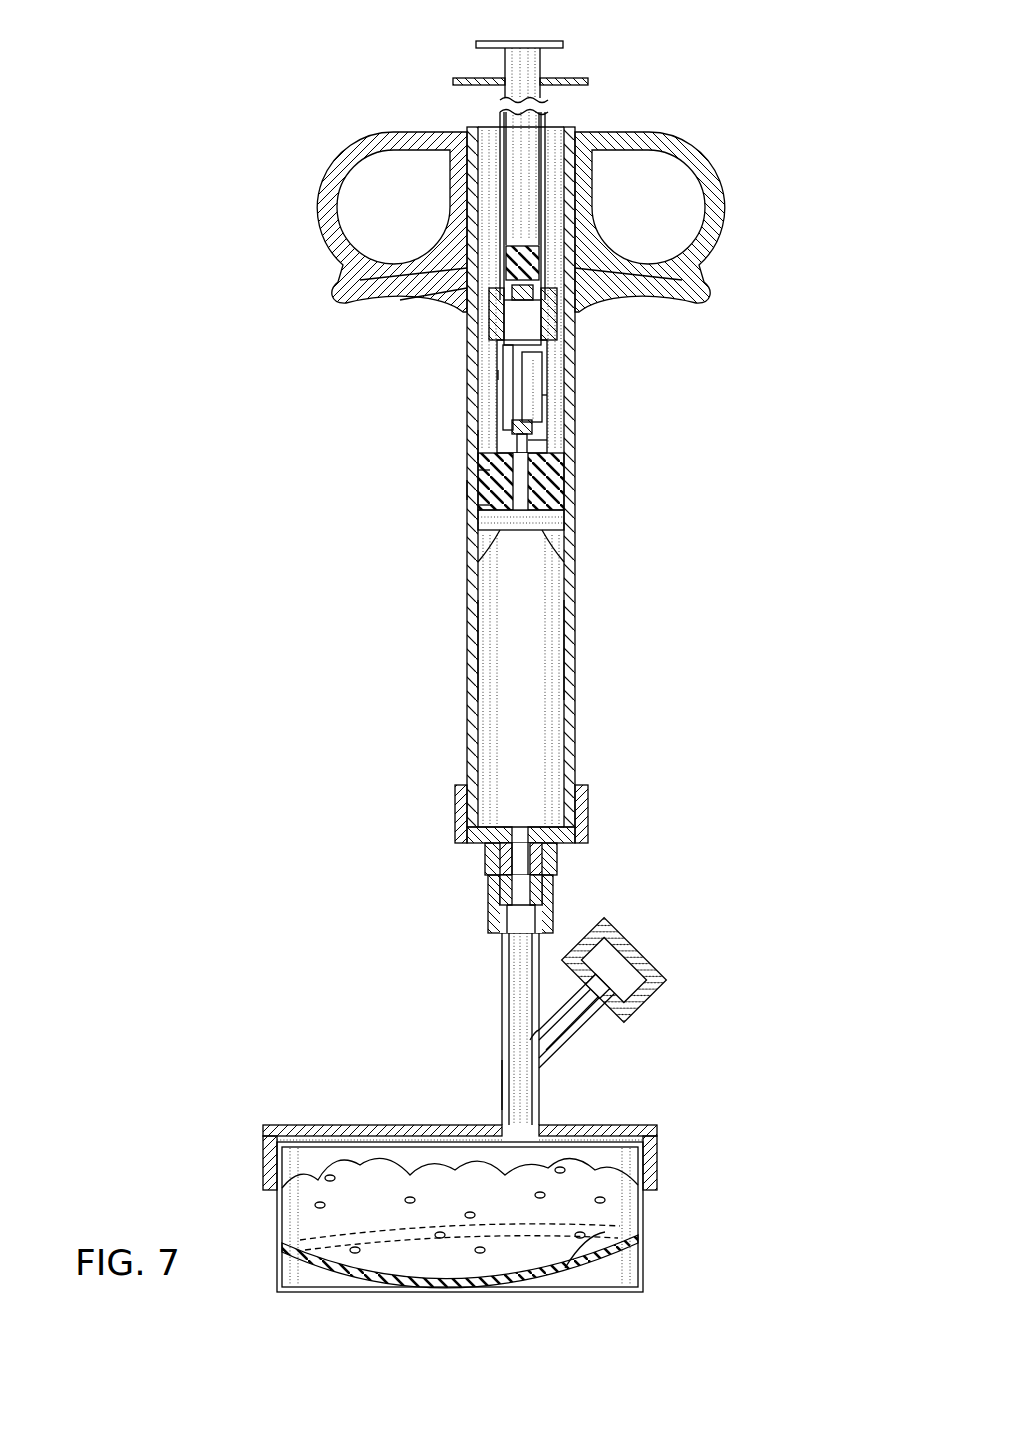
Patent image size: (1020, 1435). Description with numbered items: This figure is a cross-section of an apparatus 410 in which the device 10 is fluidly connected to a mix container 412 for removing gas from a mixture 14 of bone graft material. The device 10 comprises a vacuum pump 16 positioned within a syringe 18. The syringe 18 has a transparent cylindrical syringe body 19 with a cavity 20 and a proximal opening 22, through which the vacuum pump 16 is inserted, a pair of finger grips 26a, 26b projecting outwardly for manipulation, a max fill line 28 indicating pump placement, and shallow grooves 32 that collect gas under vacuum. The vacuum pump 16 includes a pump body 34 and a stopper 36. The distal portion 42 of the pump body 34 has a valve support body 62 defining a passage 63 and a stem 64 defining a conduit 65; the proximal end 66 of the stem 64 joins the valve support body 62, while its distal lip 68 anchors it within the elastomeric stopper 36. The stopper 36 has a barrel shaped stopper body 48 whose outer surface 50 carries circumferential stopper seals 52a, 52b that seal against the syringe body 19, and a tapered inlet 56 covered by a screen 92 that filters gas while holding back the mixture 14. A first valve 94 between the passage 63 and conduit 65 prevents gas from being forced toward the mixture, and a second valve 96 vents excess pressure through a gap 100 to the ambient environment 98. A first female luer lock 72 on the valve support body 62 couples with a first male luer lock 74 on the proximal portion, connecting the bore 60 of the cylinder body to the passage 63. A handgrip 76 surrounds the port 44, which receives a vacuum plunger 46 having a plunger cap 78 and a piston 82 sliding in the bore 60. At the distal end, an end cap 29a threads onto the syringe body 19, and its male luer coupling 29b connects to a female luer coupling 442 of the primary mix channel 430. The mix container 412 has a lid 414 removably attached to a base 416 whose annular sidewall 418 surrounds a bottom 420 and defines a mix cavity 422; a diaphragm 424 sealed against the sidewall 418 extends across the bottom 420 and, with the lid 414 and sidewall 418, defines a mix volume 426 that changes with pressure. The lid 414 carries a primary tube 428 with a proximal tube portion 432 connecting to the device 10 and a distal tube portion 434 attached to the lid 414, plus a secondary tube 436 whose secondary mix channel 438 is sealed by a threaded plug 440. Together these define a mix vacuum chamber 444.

The apparatus 410 is at (268, 55).
The device 10 is at (345, 85).
The vacuum pump 16 is at (437, 80).
The vacuum plunger 46 is at (512, 40).
The plunger cap 78 is at (548, 44).
The port 44 is at (500, 78).
The handgrip 76 is at (565, 82).
The ambient environment 98 is at (641, 81).
The max fill line 28 is at (466, 548).
The grooves 32 is at (575, 705).
The syringe body 19 is at (466, 630).
The mix vacuum chamber 444 is at (521, 680).
The cavity 20 is at (490, 155).
The proximal opening 22 is at (560, 126).
The piston 82 is at (515, 245).
The syringe 18 is at (505, 201).
The finger grip 26a is at (410, 132).
The finger grip 26b is at (668, 135).
The pump body 34 is at (487, 270).
The bore 60 is at (560, 282).
The first male luer lock 74 is at (490, 316).
The first female luer lock 72 is at (480, 330).
The valve support body 62 is at (546, 345).
The passage 63 is at (532, 380).
The proximal end 66 is at (505, 395).
The second valve 96 is at (532, 393).
The gap 100 is at (550, 400).
The first valve 94 is at (522, 415).
The distal portion 42 is at (495, 375).
The stopper 36 is at (470, 445).
The conduit 65 is at (522, 445).
The stem 64 is at (540, 455).
The stopper body 48 is at (559, 492).
The inlet 56 is at (566, 525).
The stopper seal 52a is at (470, 475).
The outer surface 50 is at (465, 490).
The stopper seal 52b is at (470, 510).
The distal lip 68 is at (500, 545).
The screen 92 is at (560, 542).
The end cap 29a is at (455, 803).
The male luer coupling 29b is at (486, 858).
The female luer coupling 442 is at (490, 872).
The proximal tube portion 432 is at (500, 940).
The primary mix channel 430 is at (503, 1018).
The primary tube 428 is at (503, 1085).
The secondary tube 436 is at (575, 1036).
The secondary mix channel 438 is at (565, 1010).
The threaded plug 440 is at (640, 948).
The mix container 412 is at (478, 1180).
The distal tube portion 434 is at (500, 1125).
The lid 414 is at (270, 1125).
The annular sidewall 418 is at (632, 1210).
The mix cavity 422 is at (614, 1162).
The base 416 is at (280, 1220).
The mixture 14 is at (297, 1200).
The mix volume 426 is at (537, 1193).
The diaphragm 424 is at (596, 1244).
The bottom 420 is at (640, 1276).